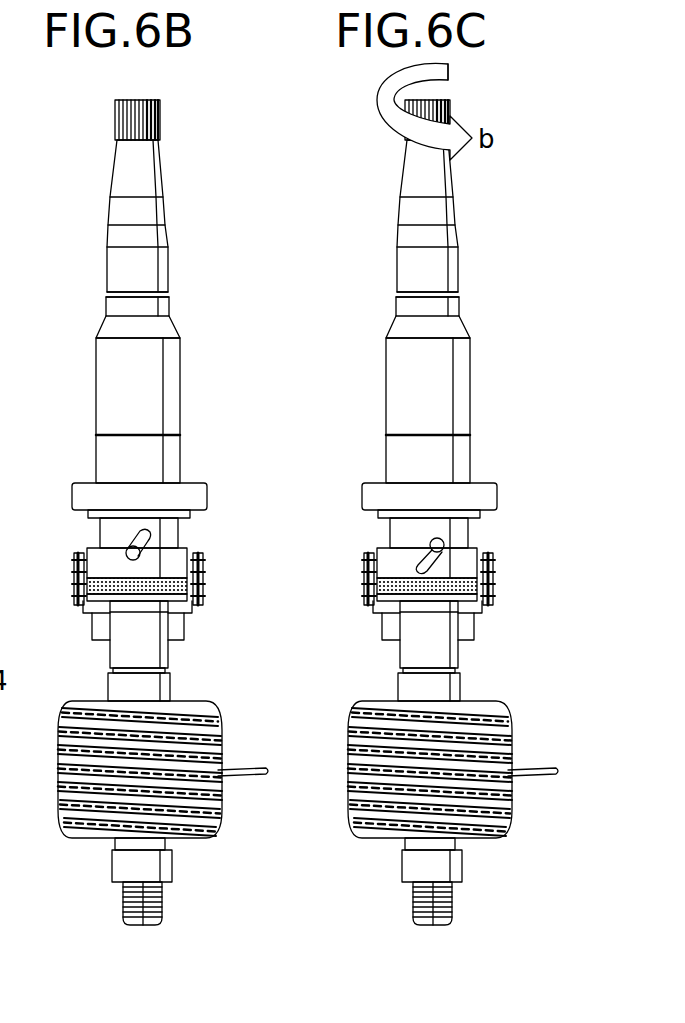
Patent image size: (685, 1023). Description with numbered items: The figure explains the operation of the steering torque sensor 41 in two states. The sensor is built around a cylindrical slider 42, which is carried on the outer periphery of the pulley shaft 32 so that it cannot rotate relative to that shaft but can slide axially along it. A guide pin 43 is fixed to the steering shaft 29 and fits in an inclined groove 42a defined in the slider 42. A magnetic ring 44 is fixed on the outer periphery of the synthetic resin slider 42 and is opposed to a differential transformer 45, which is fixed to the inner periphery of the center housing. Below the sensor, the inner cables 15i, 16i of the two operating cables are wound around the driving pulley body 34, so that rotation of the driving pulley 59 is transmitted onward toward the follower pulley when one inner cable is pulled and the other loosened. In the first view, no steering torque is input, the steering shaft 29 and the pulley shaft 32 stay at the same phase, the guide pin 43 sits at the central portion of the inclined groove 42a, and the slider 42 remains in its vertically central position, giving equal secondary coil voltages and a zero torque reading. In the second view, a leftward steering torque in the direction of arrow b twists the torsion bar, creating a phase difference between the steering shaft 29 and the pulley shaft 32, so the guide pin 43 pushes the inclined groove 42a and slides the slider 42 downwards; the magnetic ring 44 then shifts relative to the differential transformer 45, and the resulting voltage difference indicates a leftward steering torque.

In FIG. 6B, the steering shaft 29 is at (160, 357).
In FIG. 6C, the steering shaft 29 is at (460, 291).
In FIG. 6B, the pulley shaft 32 is at (175, 653).
In FIG. 6C, the pulley shaft 32 is at (471, 639).
In FIG. 6B, the driving pulley body 34 is at (210, 697).
In FIG. 6C, the driving pulley body 34 is at (452, 726).
In FIG. 6B, the steering torque sensor 41 is at (58, 613).
In FIG. 6C, the steering torque sensor 41 is at (398, 653).
In FIG. 6B, the slider 42 is at (92, 603).
In FIG. 6C, the slider 42 is at (381, 572).
In FIG. 6B, the inclined groove 42a is at (146, 538).
In FIG. 6C, the inclined groove 42a is at (385, 530).
In FIG. 6B, the guide pin 43 is at (131, 546).
In FIG. 6C, the guide pin 43 is at (375, 526).
In FIG. 6B, the magnetic ring 44 is at (140, 596).
In FIG. 6C, the magnetic ring 44 is at (429, 632).
In FIG. 6B, the differential transformer 45 is at (218, 588).
In FIG. 6C, the differential transformer 45 is at (469, 564).
In FIG. 6B, the driving pulley 59 is at (52, 758).
In FIG. 6C, the driving pulley 59 is at (401, 772).
In FIG. 6B, the inner cable 15i is at (73, 822).
In FIG. 6C, the inner cable 15i is at (371, 862).
In FIG. 6B, the inner cable 16i is at (216, 740).
In FIG. 6C, the inner cable 16i is at (535, 719).